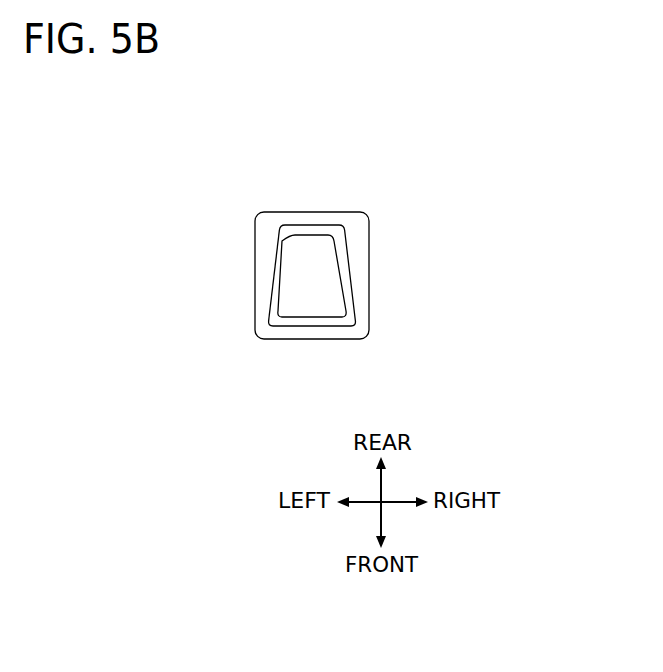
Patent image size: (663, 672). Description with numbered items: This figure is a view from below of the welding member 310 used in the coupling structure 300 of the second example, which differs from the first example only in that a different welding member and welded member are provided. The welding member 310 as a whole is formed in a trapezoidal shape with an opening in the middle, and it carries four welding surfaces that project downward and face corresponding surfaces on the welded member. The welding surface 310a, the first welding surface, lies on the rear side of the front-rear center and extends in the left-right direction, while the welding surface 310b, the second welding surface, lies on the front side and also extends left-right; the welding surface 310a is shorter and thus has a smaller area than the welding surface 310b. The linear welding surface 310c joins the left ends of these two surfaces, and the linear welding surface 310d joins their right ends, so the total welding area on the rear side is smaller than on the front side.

The coupling structure 300 is at (292, 122).
The welding member 310 is at (277, 212).
The welding surface 310a is at (317, 225).
The welding surface 310b is at (315, 330).
The welding surface 310c is at (273, 278).
The welding surface 310d is at (351, 276).